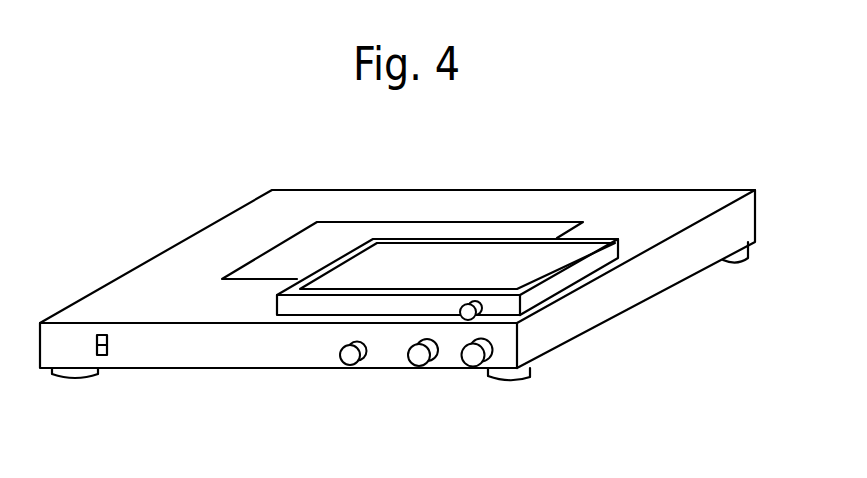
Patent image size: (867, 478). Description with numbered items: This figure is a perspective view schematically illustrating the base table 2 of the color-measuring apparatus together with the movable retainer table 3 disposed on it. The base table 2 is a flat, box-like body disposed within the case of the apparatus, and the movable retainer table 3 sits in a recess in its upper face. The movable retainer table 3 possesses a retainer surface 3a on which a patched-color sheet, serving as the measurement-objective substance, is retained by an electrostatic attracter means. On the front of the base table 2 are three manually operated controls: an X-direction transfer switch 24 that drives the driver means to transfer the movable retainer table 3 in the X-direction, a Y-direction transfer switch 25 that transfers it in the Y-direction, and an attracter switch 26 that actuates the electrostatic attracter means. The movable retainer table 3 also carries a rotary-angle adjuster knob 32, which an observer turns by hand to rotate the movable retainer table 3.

The base table 2 is at (677, 208).
The movable retainer table 3 is at (580, 272).
The retainer surface 3a is at (540, 252).
The rotary-angle adjuster knob 32 is at (483, 310).
The X-direction transfer switch 24 is at (475, 365).
The Y-direction transfer switch 25 is at (418, 365).
The attracter switch 26 is at (347, 364).